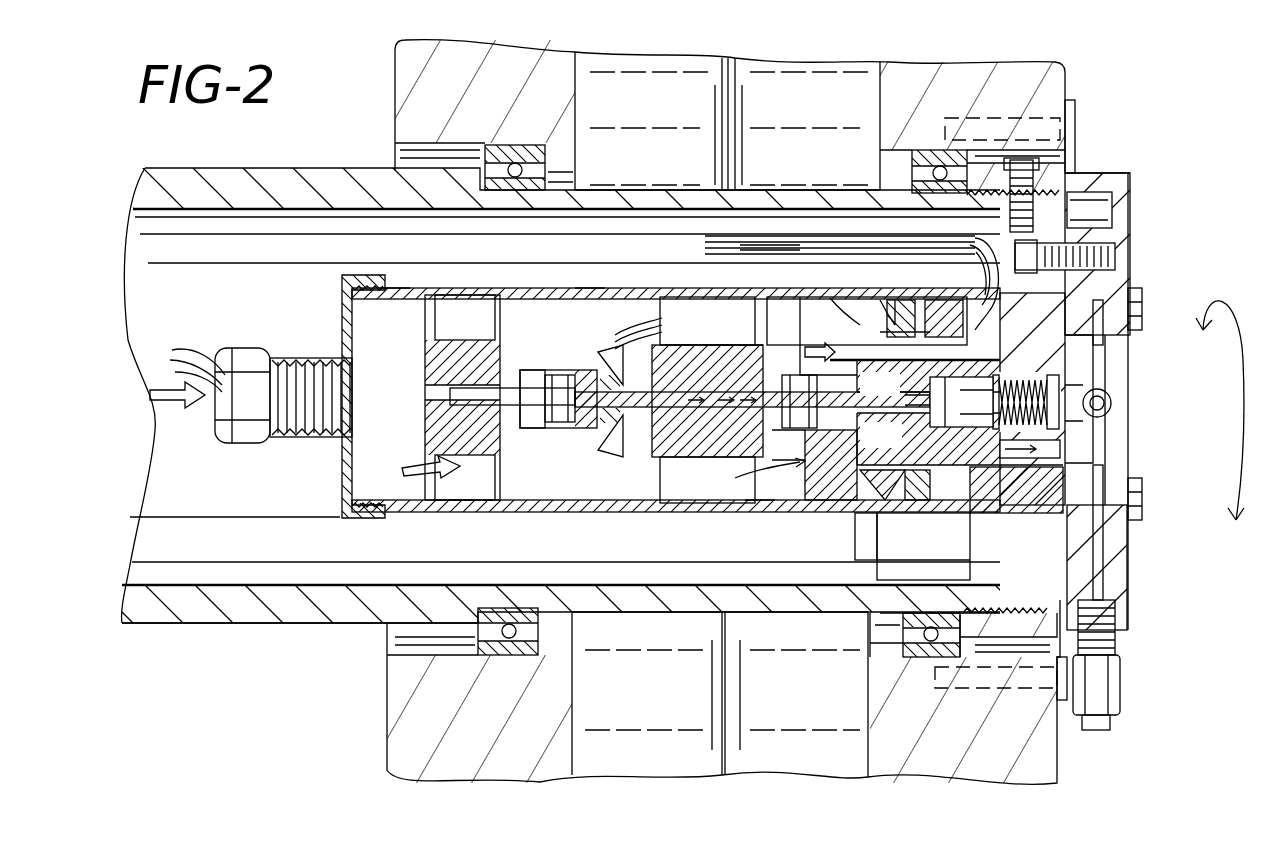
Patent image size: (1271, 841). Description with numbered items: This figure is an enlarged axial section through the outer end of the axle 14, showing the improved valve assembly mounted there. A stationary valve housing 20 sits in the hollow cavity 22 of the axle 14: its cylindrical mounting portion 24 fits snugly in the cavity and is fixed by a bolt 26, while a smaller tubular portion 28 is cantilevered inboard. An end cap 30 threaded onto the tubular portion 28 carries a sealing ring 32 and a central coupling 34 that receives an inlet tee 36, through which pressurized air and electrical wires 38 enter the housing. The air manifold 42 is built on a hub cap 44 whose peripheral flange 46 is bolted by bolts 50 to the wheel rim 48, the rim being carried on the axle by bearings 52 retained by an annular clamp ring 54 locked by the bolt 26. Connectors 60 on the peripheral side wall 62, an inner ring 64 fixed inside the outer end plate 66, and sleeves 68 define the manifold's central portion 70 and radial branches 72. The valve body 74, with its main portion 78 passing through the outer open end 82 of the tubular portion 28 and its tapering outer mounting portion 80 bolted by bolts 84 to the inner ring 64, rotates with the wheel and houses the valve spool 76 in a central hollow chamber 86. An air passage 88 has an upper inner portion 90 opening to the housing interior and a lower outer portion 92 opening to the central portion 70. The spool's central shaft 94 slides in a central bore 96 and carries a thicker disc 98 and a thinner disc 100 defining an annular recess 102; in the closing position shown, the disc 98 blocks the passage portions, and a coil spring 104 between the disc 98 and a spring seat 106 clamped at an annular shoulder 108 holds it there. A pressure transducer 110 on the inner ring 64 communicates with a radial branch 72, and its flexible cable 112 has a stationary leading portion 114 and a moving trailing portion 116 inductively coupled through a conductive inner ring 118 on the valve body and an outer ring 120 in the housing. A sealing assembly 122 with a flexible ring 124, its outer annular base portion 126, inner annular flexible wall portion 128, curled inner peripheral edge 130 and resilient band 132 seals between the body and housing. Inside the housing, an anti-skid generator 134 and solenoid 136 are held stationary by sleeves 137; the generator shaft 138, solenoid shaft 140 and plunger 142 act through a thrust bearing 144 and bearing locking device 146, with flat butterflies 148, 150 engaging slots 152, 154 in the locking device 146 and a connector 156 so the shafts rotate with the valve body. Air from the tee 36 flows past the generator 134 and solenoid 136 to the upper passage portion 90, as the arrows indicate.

The axle 14 is at (313, 168).
The valve housing 20 is at (441, 522).
The hollow cavity 22 is at (220, 563).
The cylindrical mounting portion 24 is at (885, 613).
The bolt 26 is at (1025, 178).
The tubular portion 28 is at (658, 513).
The end cap 30 is at (338, 466).
The sealing ring 32 is at (347, 512).
The central coupling 34 is at (316, 358).
The inlet tee 36 is at (240, 443).
The electrical wires 38 is at (205, 360).
The air manifold 42 is at (1125, 437).
The hub cap 44 is at (1135, 207).
The peripheral flange 46 is at (1073, 102).
The rim 48 is at (1055, 65).
The bolts 50 is at (1082, 128).
The bearings 52 is at (546, 158).
The annular clamp ring 54 is at (985, 655).
The connectors 60 is at (1118, 694).
The peripheral side wall 62 is at (1120, 177).
The inner ring 64 is at (1088, 367).
The outer end plate 66 is at (1125, 228).
The sleeves 68 is at (1118, 590).
The central portion 70 is at (1102, 455).
The radial branches 72 is at (1105, 340).
The valve body 74 is at (860, 340).
The valve spool 76 is at (927, 420).
The main portion 78 is at (808, 490).
The outer mounting portion 80 is at (1030, 514).
The outer open end 82 is at (930, 500).
The bolts 84 is at (1145, 305).
The central hollow chamber 86 is at (1000, 458).
The air passage 88 is at (880, 332).
The upper inner portion 90 is at (850, 352).
The lower outer portion 92 is at (1040, 478).
The central shaft 94 is at (683, 316).
The central bore 96 is at (810, 428).
The thicker disc 98 is at (998, 333).
The thinner disc 100 is at (915, 378).
The annular recess 102 is at (960, 560).
The coil spring 104 is at (1062, 425).
The spring seat 106 is at (1100, 407).
The annular shoulder 108 is at (1060, 385).
The electrical pressure transducer 110 is at (976, 252).
The flexible cable 112 is at (712, 247).
The leading portion 114 is at (747, 245).
The trailing portion 116 is at (1110, 258).
The inner ring 118 is at (940, 300).
The outer ring 120 is at (900, 300).
The sealing assembly 122 is at (866, 515).
The flexible ring 124 is at (895, 300).
The outer annular base portion 126 is at (880, 300).
The inner annular flexible wall portion 128 is at (830, 298).
The curled inner peripheral edge 130 is at (860, 495).
The flexible resilient band 132 is at (866, 503).
The anti-skid generator 134 is at (470, 340).
The solenoid 136 is at (670, 460).
The sleeves 137 is at (393, 300).
The anti-skid generator shaft 138 is at (435, 397).
The solenoid shaft 140 is at (650, 460).
The solenoid plunger 142 is at (655, 358).
The thrust bearing 144 is at (605, 352).
The bearing locking device 146 is at (560, 428).
The flat butterfly 148 is at (540, 428).
The flat butterfly 150 is at (760, 360).
The slot 152 is at (522, 370).
The slot 154 is at (760, 478).
The connector 156 is at (790, 478).